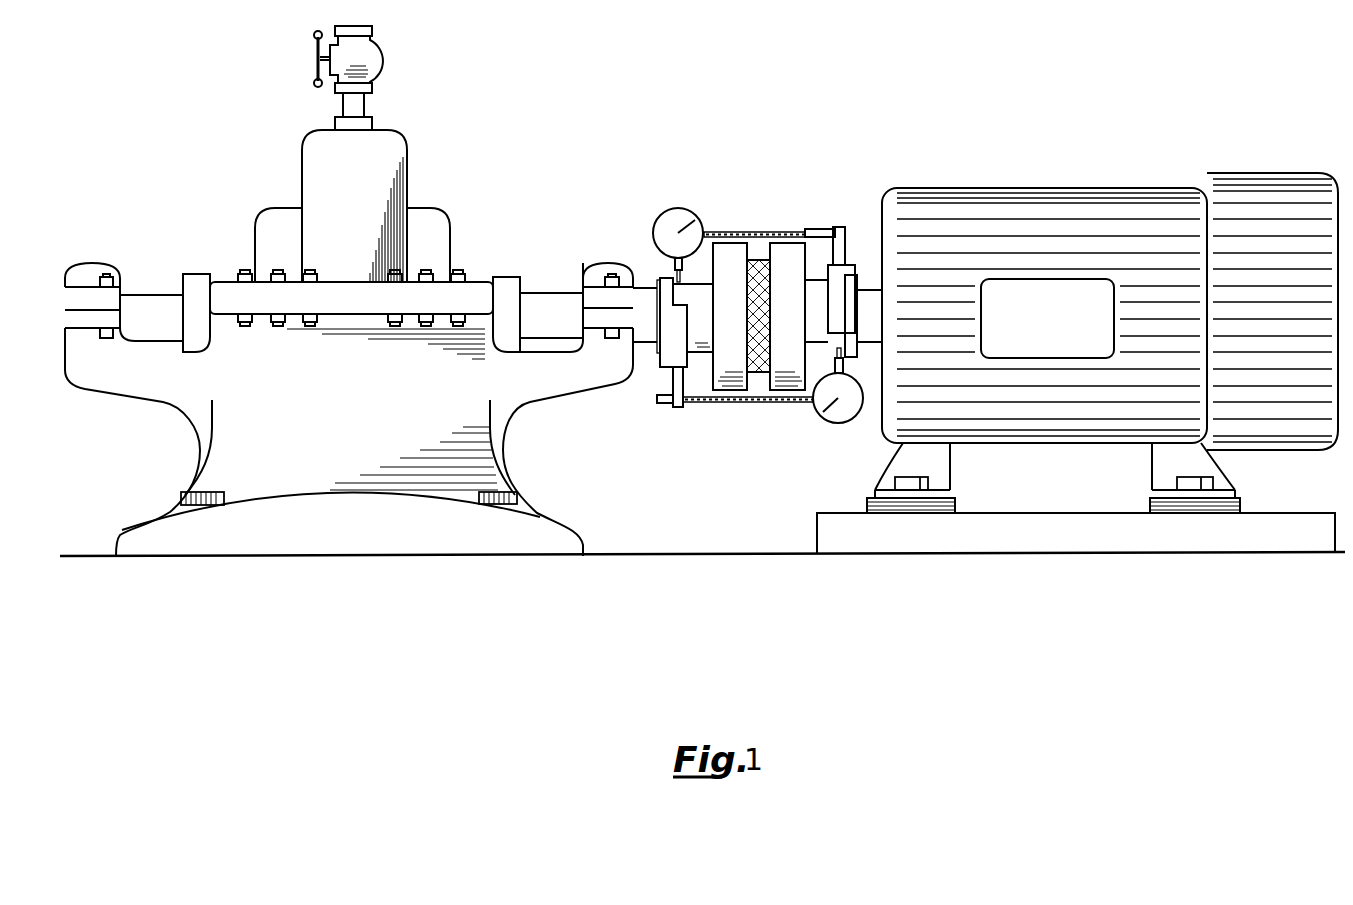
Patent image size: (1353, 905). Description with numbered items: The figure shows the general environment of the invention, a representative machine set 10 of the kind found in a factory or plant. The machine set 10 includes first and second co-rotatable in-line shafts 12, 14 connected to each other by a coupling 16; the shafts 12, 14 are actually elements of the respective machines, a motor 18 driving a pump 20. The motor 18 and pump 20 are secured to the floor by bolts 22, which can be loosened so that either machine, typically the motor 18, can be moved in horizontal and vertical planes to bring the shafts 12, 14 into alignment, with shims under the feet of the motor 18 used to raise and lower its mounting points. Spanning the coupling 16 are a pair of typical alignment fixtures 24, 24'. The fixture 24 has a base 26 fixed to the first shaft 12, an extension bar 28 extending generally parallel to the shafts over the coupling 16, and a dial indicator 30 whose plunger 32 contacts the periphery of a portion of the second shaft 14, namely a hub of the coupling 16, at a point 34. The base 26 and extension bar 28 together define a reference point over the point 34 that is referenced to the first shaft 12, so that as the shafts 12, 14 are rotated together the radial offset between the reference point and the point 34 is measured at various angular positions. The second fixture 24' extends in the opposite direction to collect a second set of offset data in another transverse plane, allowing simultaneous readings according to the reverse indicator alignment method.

The machine set 10 is at (702, 321).
The first shaft 12 is at (875, 332).
The second shaft 14 is at (647, 303).
The coupling 16 is at (758, 260).
The motor 18 is at (1067, 187).
The pump 20 is at (313, 172).
The bolts 22 is at (213, 505).
The alignment fixture 24 is at (771, 236).
The alignment fixture 24' is at (725, 343).
The base 26 is at (843, 273).
The extension bar 28 is at (745, 232).
The dial indicator 30 is at (673, 207).
The plunger 32 is at (668, 272).
The point 34 is at (690, 262).